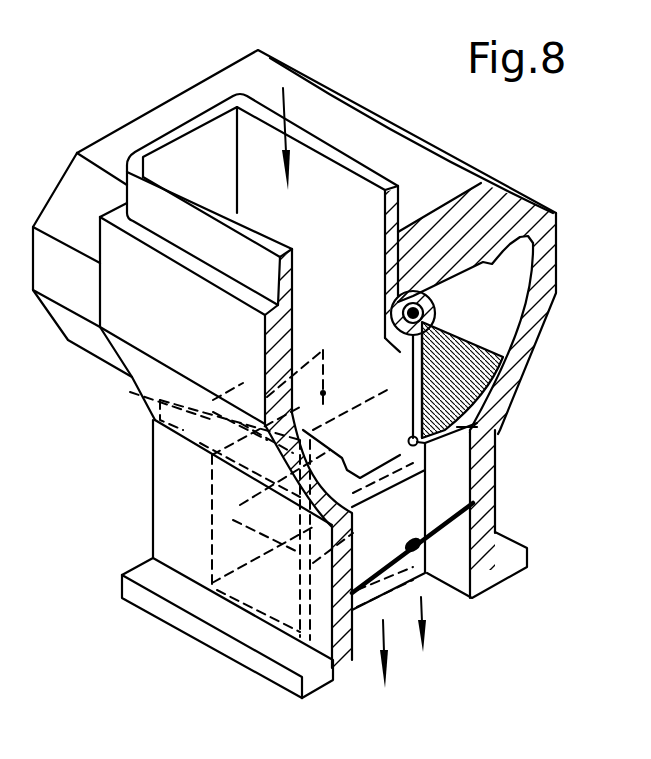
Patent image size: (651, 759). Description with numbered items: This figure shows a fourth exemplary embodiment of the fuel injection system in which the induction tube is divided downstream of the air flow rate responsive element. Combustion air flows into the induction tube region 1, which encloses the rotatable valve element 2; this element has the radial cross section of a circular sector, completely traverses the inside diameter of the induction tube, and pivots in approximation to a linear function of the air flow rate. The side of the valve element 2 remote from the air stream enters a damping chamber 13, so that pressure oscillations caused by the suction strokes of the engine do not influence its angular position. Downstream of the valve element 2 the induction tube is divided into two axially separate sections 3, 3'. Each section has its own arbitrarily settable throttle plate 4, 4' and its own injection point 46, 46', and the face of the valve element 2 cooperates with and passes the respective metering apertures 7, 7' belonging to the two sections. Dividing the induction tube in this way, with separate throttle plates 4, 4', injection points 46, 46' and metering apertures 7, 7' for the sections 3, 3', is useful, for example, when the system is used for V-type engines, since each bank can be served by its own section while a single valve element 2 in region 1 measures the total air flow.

The induction tube region 1 is at (211, 157).
The air flow rate responsive element 2 is at (470, 365).
The induction tube region 3 is at (489, 512).
The throttle plate 4 is at (312, 559).
The metering aperture 7 is at (473, 364).
The damping chamber 13 is at (500, 320).
The injection point 46 is at (501, 431).
The induction tube section 3' is at (225, 523).
The throttle plate 4' is at (231, 525).
The metering aperture 7' is at (222, 395).
The injection point 46' is at (187, 426).